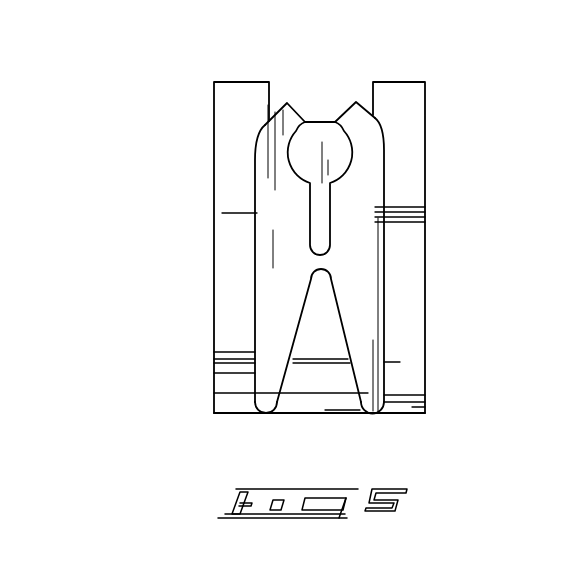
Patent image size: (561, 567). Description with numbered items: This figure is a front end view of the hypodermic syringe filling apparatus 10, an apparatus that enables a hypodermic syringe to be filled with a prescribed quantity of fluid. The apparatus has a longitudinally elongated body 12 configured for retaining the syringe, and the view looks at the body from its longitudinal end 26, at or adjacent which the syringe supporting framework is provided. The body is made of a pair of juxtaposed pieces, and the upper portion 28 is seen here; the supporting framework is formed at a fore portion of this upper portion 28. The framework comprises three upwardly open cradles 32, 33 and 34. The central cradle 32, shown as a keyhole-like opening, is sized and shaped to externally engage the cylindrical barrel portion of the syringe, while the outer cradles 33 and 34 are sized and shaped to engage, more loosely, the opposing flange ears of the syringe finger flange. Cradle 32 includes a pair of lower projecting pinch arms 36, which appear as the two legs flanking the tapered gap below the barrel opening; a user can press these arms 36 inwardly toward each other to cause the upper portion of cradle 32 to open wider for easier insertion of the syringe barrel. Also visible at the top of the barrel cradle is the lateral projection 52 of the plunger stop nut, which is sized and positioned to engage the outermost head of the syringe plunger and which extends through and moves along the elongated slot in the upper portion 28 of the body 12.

The hypodermic syringe filling apparatus 10 is at (426, 45).
The longitudinally elongated body 12 is at (427, 189).
The longitudinal end 26 is at (190, 440).
The upper portion 28 is at (402, 317).
The cradle 32 is at (357, 127).
The cradle 33 is at (398, 103).
The cradle 34 is at (238, 106).
The pinch arms 36 is at (357, 417).
The lateral projection 52 is at (306, 150).